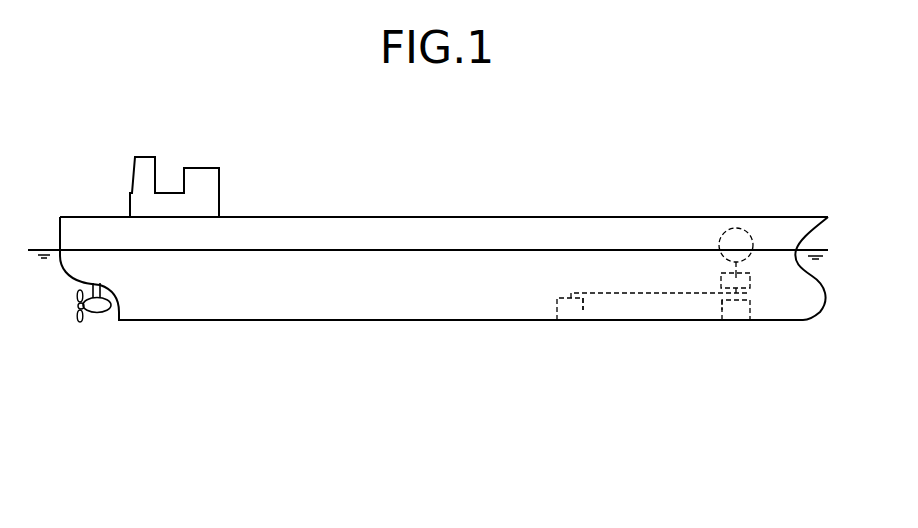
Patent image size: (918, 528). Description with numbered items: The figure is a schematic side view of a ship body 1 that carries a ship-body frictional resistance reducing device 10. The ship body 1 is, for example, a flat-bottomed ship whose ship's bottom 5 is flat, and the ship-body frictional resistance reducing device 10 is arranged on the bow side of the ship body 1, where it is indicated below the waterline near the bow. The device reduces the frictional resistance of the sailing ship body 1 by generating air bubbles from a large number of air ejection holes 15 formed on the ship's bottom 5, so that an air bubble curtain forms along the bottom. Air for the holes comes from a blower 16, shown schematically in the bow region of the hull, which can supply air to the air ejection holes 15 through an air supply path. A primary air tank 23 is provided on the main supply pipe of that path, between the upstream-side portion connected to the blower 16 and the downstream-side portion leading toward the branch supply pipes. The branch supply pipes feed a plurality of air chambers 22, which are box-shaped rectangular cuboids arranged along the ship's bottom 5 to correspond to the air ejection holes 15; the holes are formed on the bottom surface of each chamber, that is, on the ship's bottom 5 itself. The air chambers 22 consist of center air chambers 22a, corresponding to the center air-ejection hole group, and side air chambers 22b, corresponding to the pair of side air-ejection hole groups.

The ship body 1 is at (376, 218).
The ship's bottom 5 is at (245, 321).
The ship-body frictional resistance reducing device 10 is at (765, 286).
The air ejection holes 15 is at (569, 321).
The blower 16 is at (740, 230).
The air chambers 22 is at (660, 367).
The center air chambers 22a is at (690, 345).
The side air chambers 22b is at (585, 311).
The primary air tank 23 is at (720, 278).